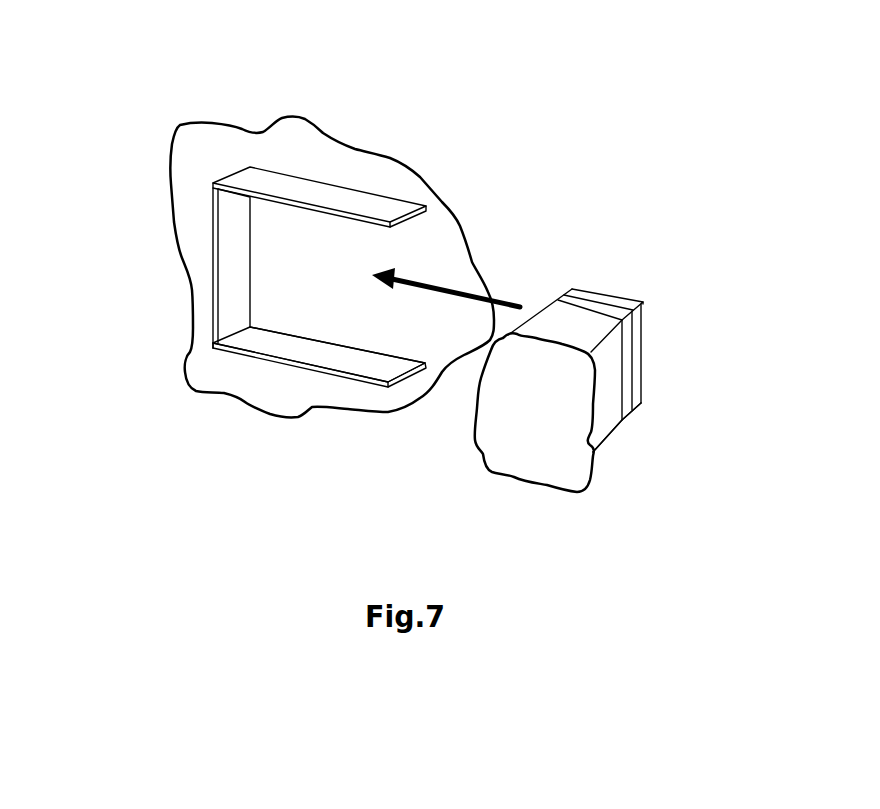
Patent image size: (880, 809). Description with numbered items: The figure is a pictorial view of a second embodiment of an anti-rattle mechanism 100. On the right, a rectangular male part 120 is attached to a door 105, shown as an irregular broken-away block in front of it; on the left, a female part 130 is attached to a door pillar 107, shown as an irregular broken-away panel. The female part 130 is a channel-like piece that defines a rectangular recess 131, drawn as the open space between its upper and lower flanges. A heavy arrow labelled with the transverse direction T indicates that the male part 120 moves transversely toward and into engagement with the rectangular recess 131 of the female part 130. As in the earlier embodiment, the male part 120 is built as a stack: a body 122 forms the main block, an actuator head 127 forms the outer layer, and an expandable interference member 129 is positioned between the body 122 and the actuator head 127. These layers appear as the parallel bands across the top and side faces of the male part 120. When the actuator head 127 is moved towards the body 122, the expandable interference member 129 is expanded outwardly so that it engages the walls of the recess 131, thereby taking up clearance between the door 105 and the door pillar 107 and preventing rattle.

The anti-rattle mechanism 100 is at (510, 108).
The door 105 is at (468, 456).
The door pillar 107 is at (223, 114).
The male part 120 is at (623, 286).
The body 122 is at (606, 440).
The actuator head 127 is at (643, 349).
The expandable interference member 129 is at (562, 295).
The female part 130 is at (199, 202).
The recess 131 is at (297, 348).
The transverse direction T is at (402, 286).